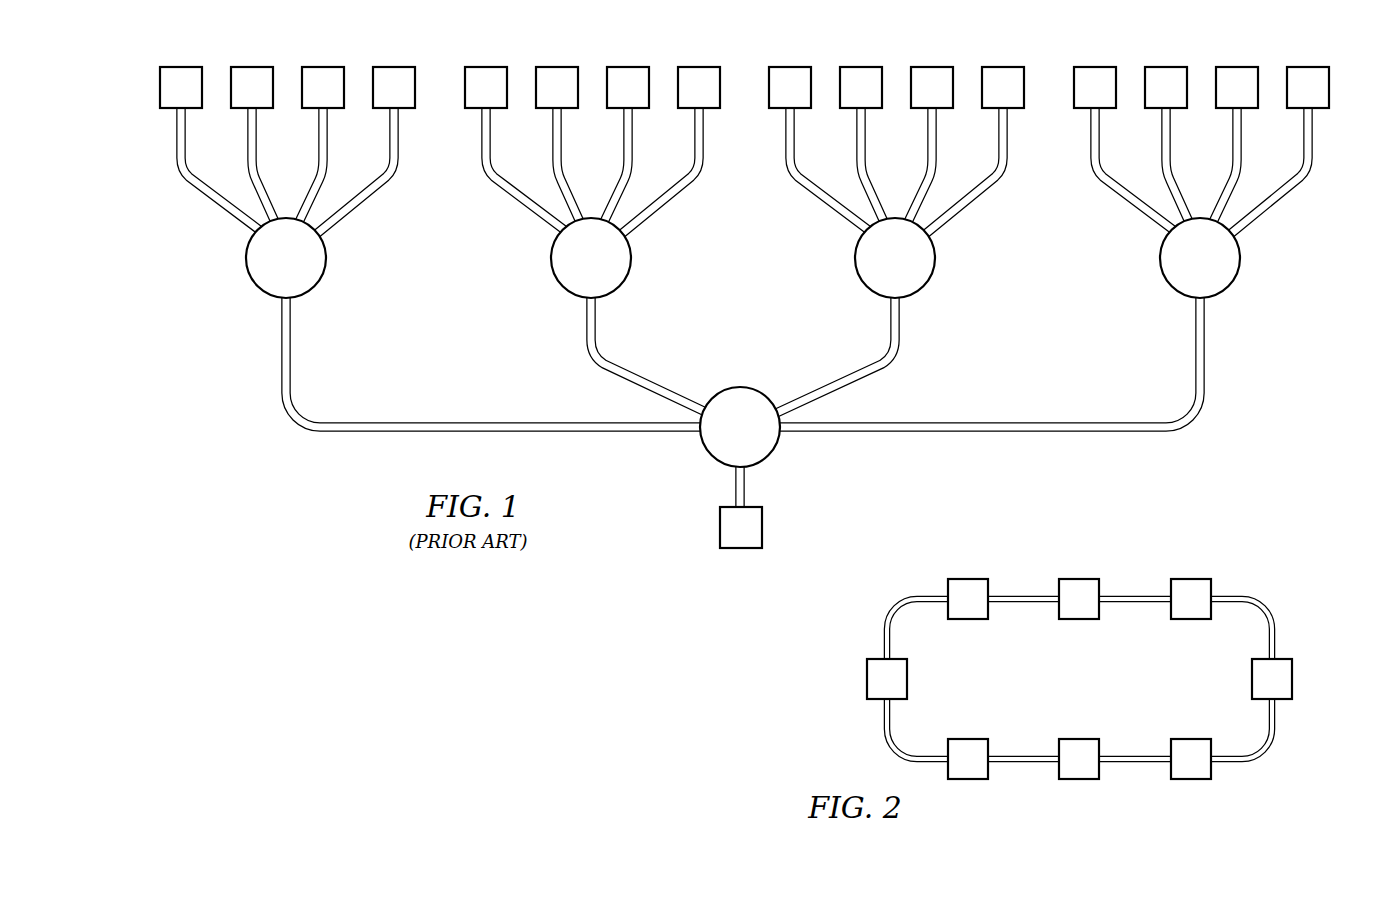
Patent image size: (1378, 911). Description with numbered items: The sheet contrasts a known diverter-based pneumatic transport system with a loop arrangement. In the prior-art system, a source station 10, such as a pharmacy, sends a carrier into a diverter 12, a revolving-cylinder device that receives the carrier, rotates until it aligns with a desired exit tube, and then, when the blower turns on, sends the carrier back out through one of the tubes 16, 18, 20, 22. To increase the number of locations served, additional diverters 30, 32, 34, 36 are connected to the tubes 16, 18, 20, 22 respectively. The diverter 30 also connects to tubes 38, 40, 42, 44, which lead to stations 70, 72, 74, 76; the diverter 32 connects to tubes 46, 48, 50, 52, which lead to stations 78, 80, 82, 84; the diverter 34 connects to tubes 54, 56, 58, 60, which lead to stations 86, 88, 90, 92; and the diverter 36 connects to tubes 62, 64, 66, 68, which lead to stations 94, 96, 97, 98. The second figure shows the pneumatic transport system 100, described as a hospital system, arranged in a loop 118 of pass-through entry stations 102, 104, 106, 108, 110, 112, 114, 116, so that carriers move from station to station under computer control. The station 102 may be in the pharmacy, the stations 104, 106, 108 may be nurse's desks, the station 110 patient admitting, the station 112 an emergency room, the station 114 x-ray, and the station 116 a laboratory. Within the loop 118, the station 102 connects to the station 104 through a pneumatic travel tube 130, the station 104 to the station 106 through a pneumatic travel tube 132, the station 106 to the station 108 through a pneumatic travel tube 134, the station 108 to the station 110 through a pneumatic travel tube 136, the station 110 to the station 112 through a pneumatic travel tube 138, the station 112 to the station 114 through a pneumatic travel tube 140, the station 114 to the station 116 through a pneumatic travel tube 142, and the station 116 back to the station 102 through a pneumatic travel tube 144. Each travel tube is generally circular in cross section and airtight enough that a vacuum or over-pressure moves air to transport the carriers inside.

In FIG. 1, the source station 10 is at (736, 549).
In FIG. 1, the diverter 12 is at (727, 441).
In FIG. 1, the tube 16 is at (281, 325).
In FIG. 1, the tube 18 is at (586, 325).
In FIG. 1, the tube 20 is at (900, 325).
In FIG. 1, the tube 22 is at (1205, 325).
In FIG. 1, the diverter 30 is at (273, 272).
In FIG. 1, the diverter 32 is at (578, 272).
In FIG. 1, the diverter 34 is at (882, 272).
In FIG. 1, the diverter 36 is at (1187, 272).
In FIG. 1, the tube 38 is at (177, 143).
In FIG. 1, the tube 40 is at (248, 143).
In FIG. 1, the tube 42 is at (319, 143).
In FIG. 1, the tube 44 is at (390, 143).
In FIG. 1, the tube 46 is at (482, 143).
In FIG. 1, the tube 48 is at (553, 143).
In FIG. 1, the tube 50 is at (624, 143).
In FIG. 1, the tube 52 is at (695, 143).
In FIG. 1, the tube 54 is at (794, 143).
In FIG. 1, the tube 56 is at (865, 143).
In FIG. 1, the tube 58 is at (936, 143).
In FIG. 1, the tube 60 is at (1007, 143).
In FIG. 1, the tube 62 is at (1099, 143).
In FIG. 1, the tube 64 is at (1170, 143).
In FIG. 1, the tube 66 is at (1241, 143).
In FIG. 1, the tube 68 is at (1311, 143).
In FIG. 1, the station 70 is at (177, 67).
In FIG. 1, the station 72 is at (248, 67).
In FIG. 1, the station 74 is at (319, 67).
In FIG. 1, the station 76 is at (390, 67).
In FIG. 1, the station 78 is at (482, 67).
In FIG. 1, the station 80 is at (553, 67).
In FIG. 1, the station 82 is at (624, 67).
In FIG. 1, the station 84 is at (695, 67).
In FIG. 1, the station 86 is at (795, 67).
In FIG. 1, the station 88 is at (866, 67).
In FIG. 1, the station 90 is at (937, 67).
In FIG. 1, the station 92 is at (1008, 67).
In FIG. 1, the station 94 is at (1100, 67).
In FIG. 1, the station 96 is at (1171, 67).
In FIG. 1, the station 97 is at (1242, 67).
In FIG. 1, the station 98 is at (1313, 67).
In FIG. 2, the pneumatic transport system 100 is at (1277, 555).
In FIG. 2, the pass-through entry station 102 is at (866, 681).
In FIG. 2, the pass-through entry station 104 is at (963, 578).
In FIG. 2, the pass-through entry station 106 is at (1087, 578).
In FIG. 2, the pass-through entry station 108 is at (1196, 578).
In FIG. 2, the pass-through entry station 110 is at (1294, 681).
In FIG. 2, the pass-through entry station 112 is at (1195, 780).
In FIG. 2, the pass-through entry station 114 is at (1083, 780).
In FIG. 2, the pass-through entry station 116 is at (960, 780).
In FIG. 2, the loop 118 is at (1081, 680).
In FIG. 2, the pneumatic travel tube 130 is at (885, 628).
In FIG. 2, the pneumatic travel tube 132 is at (1024, 596).
In FIG. 2, the pneumatic travel tube 134 is at (1136, 596).
In FIG. 2, the pneumatic travel tube 136 is at (1277, 628).
In FIG. 2, the pneumatic travel tube 138 is at (1277, 728).
In FIG. 2, the pneumatic travel tube 140 is at (1135, 763).
In FIG. 2, the pneumatic travel tube 142 is at (1022, 763).
In FIG. 2, the pneumatic travel tube 144 is at (885, 728).